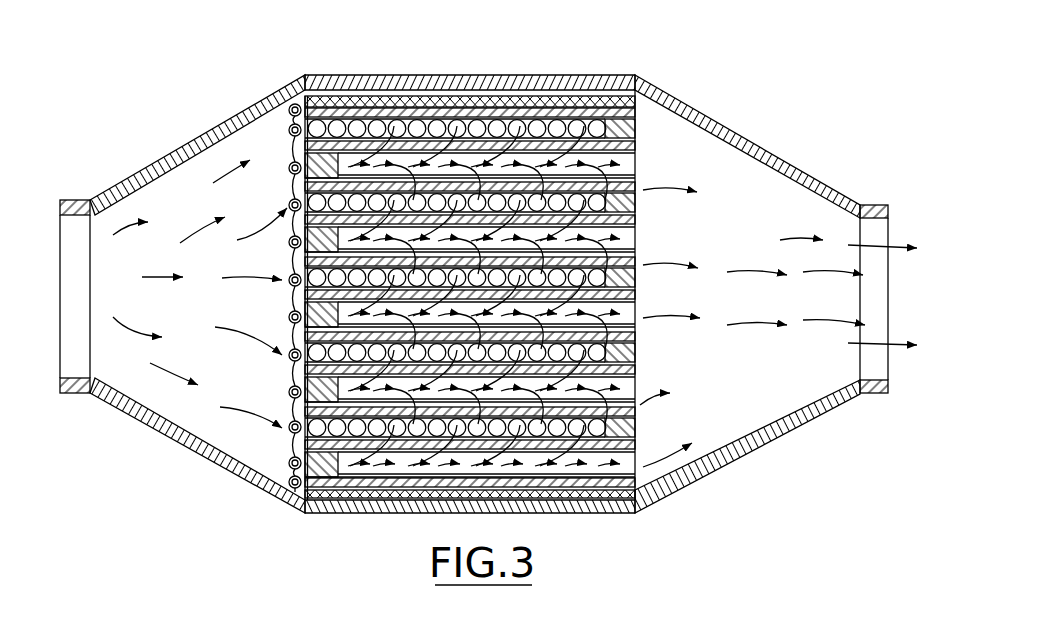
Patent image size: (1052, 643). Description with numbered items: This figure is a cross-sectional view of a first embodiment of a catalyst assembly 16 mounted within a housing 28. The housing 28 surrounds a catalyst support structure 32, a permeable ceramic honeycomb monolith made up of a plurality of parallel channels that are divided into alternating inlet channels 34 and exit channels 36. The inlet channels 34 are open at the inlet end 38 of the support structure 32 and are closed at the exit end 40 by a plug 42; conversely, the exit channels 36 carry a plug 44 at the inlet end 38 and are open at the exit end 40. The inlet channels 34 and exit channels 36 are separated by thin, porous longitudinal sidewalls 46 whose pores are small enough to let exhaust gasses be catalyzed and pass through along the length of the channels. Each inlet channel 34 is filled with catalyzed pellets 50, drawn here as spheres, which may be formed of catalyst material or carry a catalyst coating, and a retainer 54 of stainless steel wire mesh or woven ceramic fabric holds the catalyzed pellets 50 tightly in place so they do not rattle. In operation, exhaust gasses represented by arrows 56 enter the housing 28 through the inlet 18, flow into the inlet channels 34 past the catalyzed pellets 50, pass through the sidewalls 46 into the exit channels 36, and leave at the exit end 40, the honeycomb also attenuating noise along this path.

The catalyst assembly 16 is at (136, 70).
The inlet 18 is at (73, 198).
The housing 28 is at (183, 147).
The catalyst support structure 32 is at (305, 447).
The inlet channels 34 is at (325, 108).
The exit channels 36 is at (636, 160).
The inlet end 38 is at (252, 147).
The exit end 40 is at (735, 243).
The plug 42 is at (628, 124).
The plug 44 is at (283, 170).
The porous longitudinal sidewalls 46 is at (478, 128).
The catalyzed pellets 50 is at (555, 106).
The retainer 54 is at (297, 410).
The exhaust gasses 56 is at (143, 333).